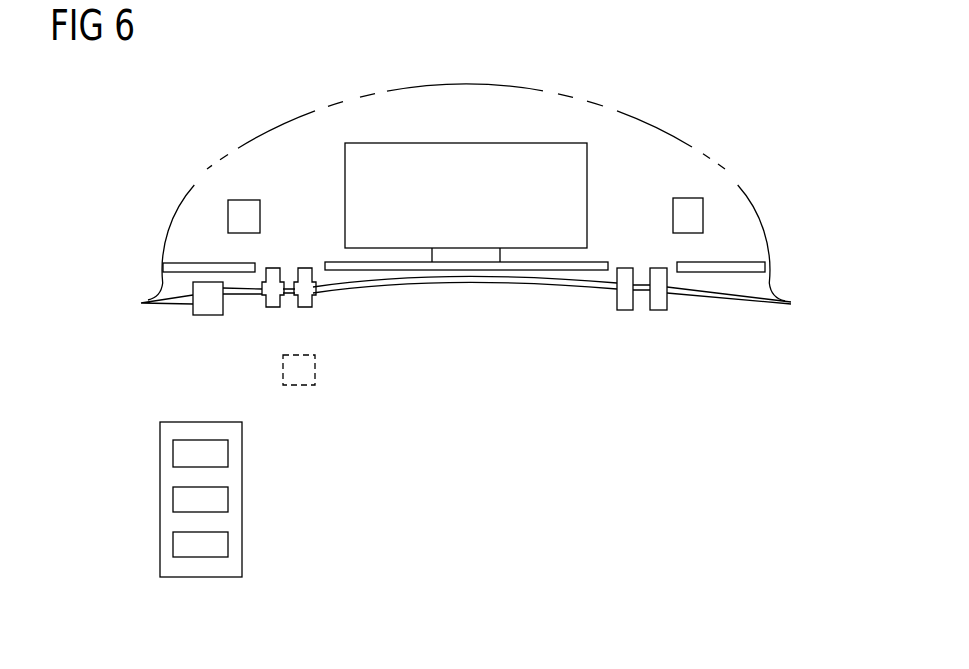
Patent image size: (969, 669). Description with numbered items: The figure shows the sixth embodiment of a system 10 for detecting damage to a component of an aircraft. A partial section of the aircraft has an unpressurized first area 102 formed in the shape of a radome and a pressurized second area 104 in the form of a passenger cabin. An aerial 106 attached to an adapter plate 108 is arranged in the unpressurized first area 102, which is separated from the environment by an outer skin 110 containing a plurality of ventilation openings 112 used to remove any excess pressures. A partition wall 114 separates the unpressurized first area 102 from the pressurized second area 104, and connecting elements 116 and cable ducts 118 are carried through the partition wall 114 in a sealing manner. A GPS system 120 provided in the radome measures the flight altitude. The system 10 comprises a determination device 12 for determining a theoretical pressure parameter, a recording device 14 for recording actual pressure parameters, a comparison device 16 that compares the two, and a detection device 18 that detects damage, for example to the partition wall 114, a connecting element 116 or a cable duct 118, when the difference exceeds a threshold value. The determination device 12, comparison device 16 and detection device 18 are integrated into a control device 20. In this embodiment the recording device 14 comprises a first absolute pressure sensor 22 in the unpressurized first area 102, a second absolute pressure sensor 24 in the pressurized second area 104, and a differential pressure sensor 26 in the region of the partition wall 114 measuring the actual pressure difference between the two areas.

The system 10 is at (130, 388).
The determination device 12 is at (173, 452).
The recording device 14 is at (174, 313).
The comparison device 16 is at (173, 500).
The detection device 18 is at (173, 545).
The control device 20 is at (224, 491).
The first absolute pressure sensor 22 is at (246, 202).
The second absolute pressure sensor 24 is at (315, 375).
The differential pressure sensor 26 is at (208, 316).
The unpressurized first area 102 is at (640, 132).
The pressurized second area 104 is at (615, 375).
The aerial 106 is at (588, 160).
The adapter plate 108 is at (600, 262).
The outer skin 110 is at (466, 87).
The ventilation openings 112 is at (198, 151).
The partition wall 114 is at (460, 287).
The connecting elements 116 is at (323, 314).
The cable ducts 118 is at (683, 315).
The GPS system 120 is at (703, 218).